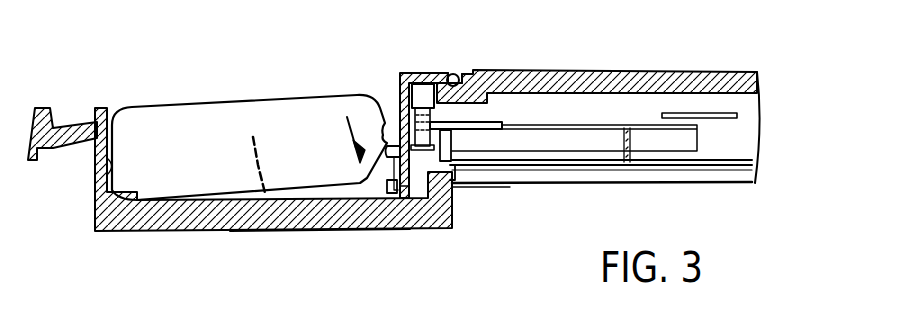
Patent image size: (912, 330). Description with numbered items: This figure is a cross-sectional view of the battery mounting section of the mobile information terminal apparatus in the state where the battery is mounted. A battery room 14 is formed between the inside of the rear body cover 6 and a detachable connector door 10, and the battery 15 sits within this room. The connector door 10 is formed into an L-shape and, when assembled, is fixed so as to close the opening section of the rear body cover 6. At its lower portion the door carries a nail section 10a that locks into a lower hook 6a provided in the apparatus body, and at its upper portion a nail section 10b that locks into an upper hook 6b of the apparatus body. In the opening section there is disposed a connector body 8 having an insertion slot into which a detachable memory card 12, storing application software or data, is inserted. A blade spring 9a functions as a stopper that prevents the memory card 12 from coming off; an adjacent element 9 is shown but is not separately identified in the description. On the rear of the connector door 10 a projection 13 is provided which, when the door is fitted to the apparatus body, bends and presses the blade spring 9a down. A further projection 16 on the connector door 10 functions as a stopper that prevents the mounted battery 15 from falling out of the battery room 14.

The rear body cover 6 is at (248, 230).
The lower hook 6a is at (380, 187).
The upper hook 6b is at (453, 73).
The connector body 8 is at (583, 125).
The housing 9 is at (540, 70).
The blade spring 9a is at (419, 152).
The connector door 10 is at (417, 73).
The nail section 10a is at (400, 199).
The nail section 10b is at (461, 72).
The memory card 12 is at (452, 173).
The projection 13 is at (398, 110).
The battery room 14 is at (143, 103).
The battery 15 is at (268, 95).
The projection 16 is at (333, 230).